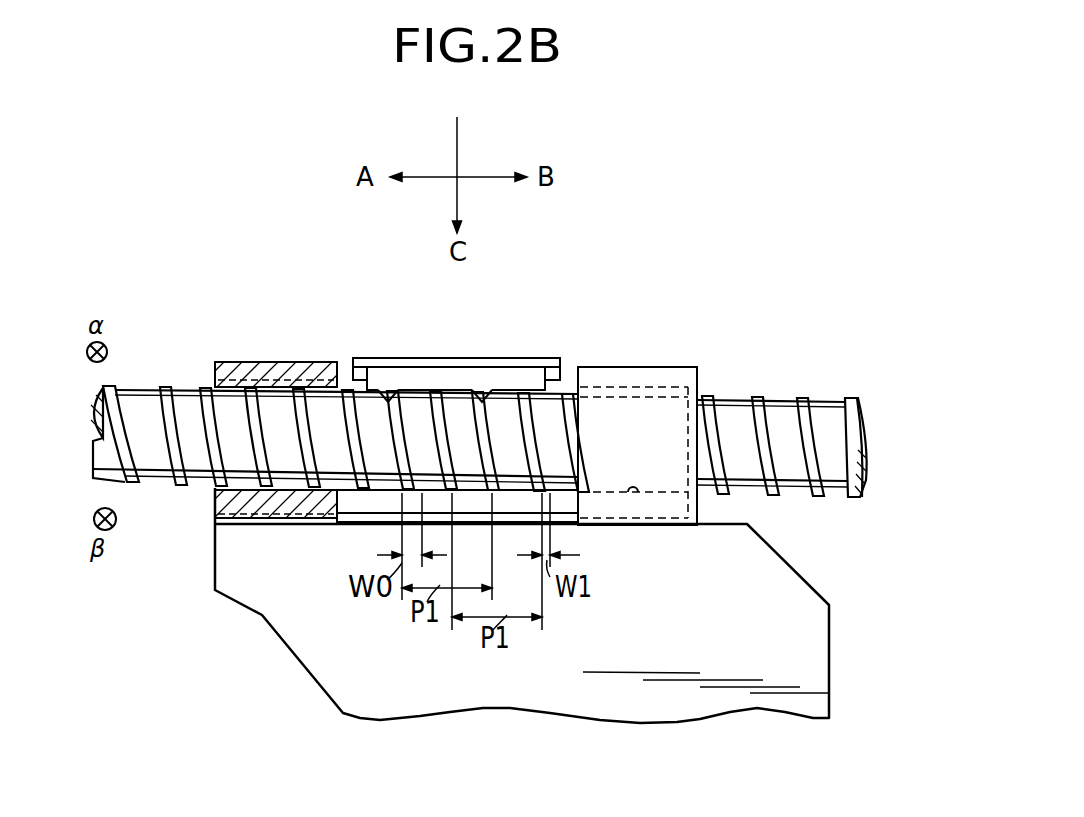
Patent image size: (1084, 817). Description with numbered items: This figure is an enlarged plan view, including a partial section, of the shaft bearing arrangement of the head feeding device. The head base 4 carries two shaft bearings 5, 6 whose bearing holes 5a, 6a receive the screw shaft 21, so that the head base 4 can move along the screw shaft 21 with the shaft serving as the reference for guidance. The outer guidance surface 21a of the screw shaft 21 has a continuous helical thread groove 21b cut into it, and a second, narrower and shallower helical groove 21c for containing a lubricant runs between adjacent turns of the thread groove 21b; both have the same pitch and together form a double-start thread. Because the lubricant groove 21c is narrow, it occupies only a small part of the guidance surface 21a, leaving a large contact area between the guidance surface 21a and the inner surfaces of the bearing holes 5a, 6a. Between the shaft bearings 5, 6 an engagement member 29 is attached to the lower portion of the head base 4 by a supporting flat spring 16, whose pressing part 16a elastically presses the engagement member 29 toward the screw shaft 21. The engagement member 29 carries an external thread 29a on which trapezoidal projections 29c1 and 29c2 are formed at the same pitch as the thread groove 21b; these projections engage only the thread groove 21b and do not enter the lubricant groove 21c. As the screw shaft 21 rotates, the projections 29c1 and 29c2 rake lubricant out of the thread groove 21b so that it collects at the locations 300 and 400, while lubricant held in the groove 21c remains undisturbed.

The screw shaft 21 is at (858, 396).
The guidance surface 21a is at (183, 386).
The thread groove 21b is at (140, 480).
The groove for containing a lubricant 21c is at (797, 397).
The shaft bearing 6 is at (247, 366).
The bearing hole 6a is at (262, 494).
The supporting flat spring 16 is at (555, 356).
The pressing part 16a is at (507, 358).
The engagement member 29 is at (443, 370).
The external thread 29a is at (421, 389).
The projection 29c1 is at (388, 388).
The projection 29c2 is at (480, 388).
The lubricant collecting location 300 is at (357, 386).
The lubricant collecting location 400 is at (558, 382).
The shaft bearing 5 is at (647, 373).
The bearing hole 5a is at (637, 498).
The head base 4 is at (787, 642).